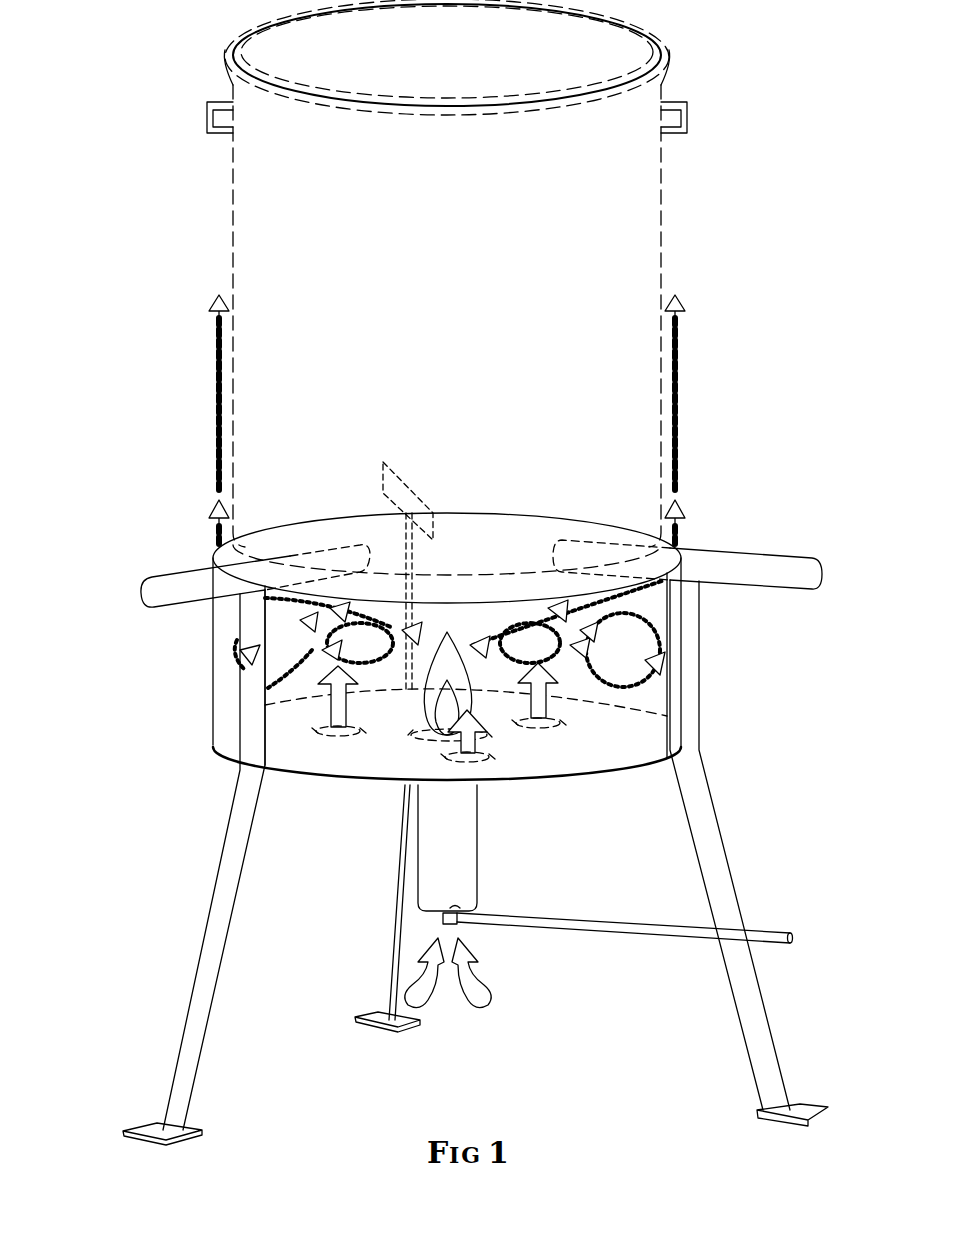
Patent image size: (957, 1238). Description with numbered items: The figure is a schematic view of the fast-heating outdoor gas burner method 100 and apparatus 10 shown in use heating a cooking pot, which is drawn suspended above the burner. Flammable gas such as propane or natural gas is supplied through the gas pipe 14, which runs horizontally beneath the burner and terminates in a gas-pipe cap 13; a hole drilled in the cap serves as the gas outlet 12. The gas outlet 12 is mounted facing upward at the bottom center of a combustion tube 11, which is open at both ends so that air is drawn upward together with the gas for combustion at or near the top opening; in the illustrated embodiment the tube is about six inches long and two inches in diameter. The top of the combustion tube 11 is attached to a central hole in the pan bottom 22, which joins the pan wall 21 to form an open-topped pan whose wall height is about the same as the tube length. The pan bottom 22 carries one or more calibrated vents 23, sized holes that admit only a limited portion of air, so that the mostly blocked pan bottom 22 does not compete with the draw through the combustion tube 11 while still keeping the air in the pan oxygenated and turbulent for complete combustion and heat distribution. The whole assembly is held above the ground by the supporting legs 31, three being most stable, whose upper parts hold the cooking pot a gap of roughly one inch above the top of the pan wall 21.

The fast-heating outdoor gas burner method 100 is at (118, 430).
The apparatus 10 is at (124, 506).
The pan wall 21 is at (220, 673).
The pan bottom 22 is at (394, 758).
The calibrated vents 23 is at (548, 720).
The supporting legs 31 is at (228, 858).
The combustion tube 11 is at (468, 830).
The gas outlet 12 is at (447, 908).
The gas-pipe cap 13 is at (455, 927).
The gas pipe 14 is at (555, 925).